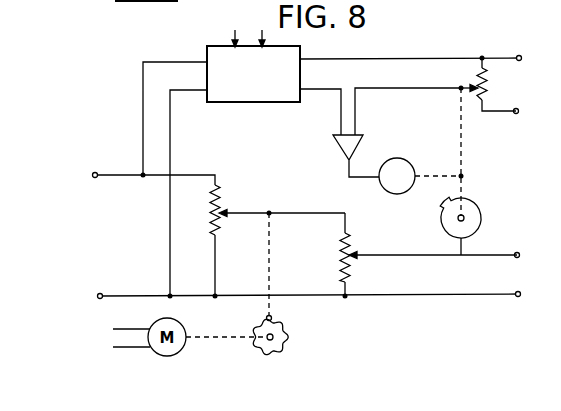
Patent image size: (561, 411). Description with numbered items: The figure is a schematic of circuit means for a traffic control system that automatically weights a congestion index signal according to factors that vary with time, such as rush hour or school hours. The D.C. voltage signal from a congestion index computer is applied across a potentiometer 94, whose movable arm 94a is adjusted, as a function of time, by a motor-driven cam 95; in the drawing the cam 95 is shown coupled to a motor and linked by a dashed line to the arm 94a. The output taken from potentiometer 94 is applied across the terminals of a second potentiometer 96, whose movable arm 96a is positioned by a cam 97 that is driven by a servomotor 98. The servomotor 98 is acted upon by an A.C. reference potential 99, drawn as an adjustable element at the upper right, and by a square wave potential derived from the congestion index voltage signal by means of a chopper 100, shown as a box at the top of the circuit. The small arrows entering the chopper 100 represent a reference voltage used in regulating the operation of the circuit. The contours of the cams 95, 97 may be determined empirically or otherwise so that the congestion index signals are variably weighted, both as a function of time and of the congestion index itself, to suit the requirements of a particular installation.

The chopper 100 is at (251, 103).
The potentiometer 94 is at (219, 197).
The movable arm 94a is at (246, 212).
The motor-driven cam 95 is at (286, 344).
The second potentiometer 96 is at (338, 240).
The movable arm 96a is at (356, 252).
The cam 97 is at (478, 218).
The servomotor 98 is at (407, 158).
The A.C. reference potential 99 is at (480, 99).